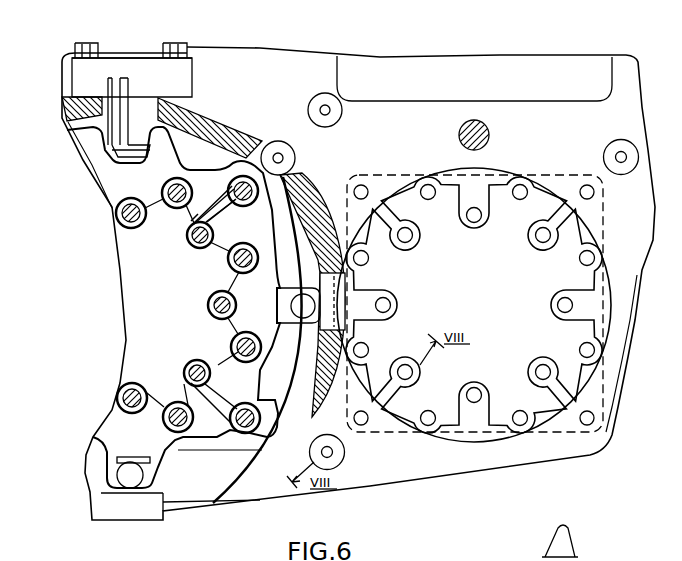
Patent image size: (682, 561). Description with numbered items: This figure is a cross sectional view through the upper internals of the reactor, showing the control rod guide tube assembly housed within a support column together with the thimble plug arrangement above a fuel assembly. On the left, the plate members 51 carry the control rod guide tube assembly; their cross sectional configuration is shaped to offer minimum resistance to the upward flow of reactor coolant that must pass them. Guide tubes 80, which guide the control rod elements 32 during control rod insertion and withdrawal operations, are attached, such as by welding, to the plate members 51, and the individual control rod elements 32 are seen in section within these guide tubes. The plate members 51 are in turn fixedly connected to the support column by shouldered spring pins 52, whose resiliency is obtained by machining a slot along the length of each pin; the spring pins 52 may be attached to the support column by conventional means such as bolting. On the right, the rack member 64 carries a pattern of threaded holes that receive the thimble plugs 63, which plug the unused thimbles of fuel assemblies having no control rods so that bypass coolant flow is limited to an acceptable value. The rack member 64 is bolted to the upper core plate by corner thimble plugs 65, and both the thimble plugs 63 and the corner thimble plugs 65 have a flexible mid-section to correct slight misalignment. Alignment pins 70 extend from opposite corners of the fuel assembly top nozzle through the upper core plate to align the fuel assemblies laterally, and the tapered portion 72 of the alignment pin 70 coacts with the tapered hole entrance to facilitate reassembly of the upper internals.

The control rod elements 32 is at (243, 410).
The plate members 51 is at (112, 432).
The shouldered spring pins 52 is at (140, 57).
The thimble plugs 63 is at (527, 410).
The rack member 64 is at (572, 422).
The corner thimble plugs 65 is at (627, 418).
The alignment pins 70 is at (604, 152).
The tapered portion 72 is at (573, 532).
The guide tubes 80 is at (223, 450).